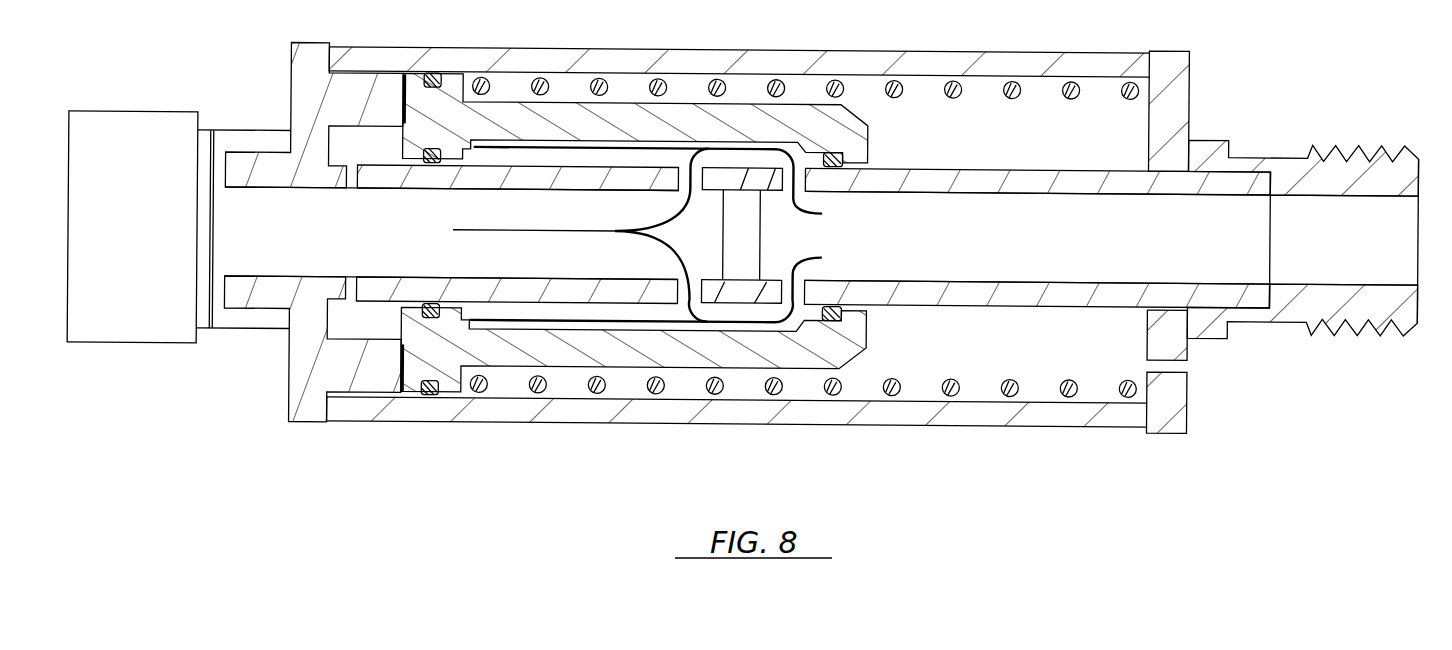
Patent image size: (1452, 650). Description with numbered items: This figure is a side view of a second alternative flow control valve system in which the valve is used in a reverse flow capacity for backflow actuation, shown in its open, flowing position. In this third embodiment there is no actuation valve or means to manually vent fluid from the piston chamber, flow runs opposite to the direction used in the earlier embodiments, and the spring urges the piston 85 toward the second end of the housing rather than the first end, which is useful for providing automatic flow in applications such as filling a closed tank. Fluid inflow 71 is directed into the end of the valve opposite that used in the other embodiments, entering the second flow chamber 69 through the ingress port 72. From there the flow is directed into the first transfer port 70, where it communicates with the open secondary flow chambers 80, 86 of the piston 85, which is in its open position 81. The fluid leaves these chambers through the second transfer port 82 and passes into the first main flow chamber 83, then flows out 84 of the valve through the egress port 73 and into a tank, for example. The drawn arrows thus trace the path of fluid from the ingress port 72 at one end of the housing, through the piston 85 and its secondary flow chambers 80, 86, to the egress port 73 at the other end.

The second flow chamber 69 is at (1085, 235).
The first transfer port 70 is at (788, 283).
The fluid inflow 71 is at (1429, 246).
The ingress port 72 is at (1450, 233).
The egress port 73 is at (145, 333).
The secondary flow chamber 80 is at (813, 247).
The open position 81 is at (634, 346).
The second transfer port 82 is at (699, 277).
The first main flow chamber 83 is at (445, 242).
The outflow 84 is at (80, 234).
The piston 85 is at (677, 133).
The secondary flow chamber 86 is at (742, 168).